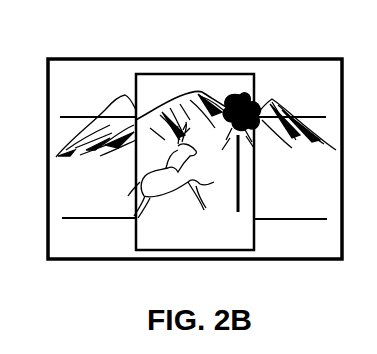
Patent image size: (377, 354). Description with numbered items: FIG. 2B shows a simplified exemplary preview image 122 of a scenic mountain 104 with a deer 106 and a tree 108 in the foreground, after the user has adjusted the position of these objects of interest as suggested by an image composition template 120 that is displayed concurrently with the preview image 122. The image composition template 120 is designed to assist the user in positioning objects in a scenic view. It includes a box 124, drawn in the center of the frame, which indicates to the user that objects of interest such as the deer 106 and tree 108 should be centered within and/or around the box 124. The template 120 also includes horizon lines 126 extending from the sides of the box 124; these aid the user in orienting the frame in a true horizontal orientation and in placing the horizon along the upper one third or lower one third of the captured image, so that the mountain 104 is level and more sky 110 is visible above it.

The scenic mountain 104 is at (275, 104).
The deer 106 is at (166, 200).
The tree 108 is at (243, 170).
The sky 110 is at (94, 85).
The image composition template 120 is at (268, 233).
The preview image 122 is at (48, 148).
The box 124 is at (205, 74).
The horizon lines 126 is at (123, 215).